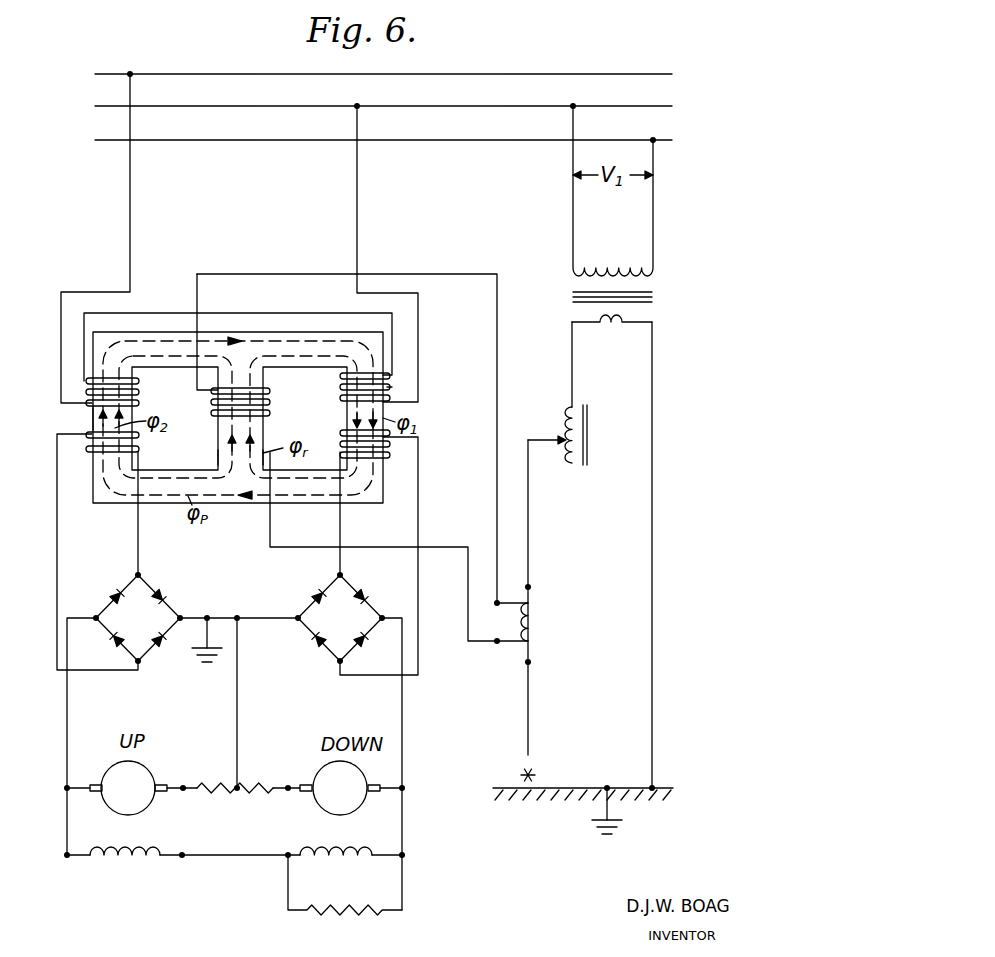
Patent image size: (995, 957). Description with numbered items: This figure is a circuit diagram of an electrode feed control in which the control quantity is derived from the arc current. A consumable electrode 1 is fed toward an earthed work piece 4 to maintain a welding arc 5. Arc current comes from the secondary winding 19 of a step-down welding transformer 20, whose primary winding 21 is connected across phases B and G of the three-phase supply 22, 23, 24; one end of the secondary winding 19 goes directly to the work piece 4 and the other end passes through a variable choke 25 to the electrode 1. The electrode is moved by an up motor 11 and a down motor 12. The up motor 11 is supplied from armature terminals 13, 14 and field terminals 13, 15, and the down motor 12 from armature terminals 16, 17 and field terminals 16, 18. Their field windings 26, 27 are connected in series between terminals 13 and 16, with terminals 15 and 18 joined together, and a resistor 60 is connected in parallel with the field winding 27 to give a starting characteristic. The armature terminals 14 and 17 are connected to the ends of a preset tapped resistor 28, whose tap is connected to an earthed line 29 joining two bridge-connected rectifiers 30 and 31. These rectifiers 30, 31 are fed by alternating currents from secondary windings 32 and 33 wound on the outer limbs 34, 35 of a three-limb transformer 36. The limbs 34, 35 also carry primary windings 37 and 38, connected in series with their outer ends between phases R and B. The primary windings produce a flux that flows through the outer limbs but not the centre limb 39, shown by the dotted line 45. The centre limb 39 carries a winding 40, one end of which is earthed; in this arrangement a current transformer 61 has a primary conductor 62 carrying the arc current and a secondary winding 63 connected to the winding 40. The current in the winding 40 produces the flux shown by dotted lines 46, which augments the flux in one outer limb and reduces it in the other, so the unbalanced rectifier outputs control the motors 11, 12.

The consumable electrode 1 is at (529, 717).
The work piece 4 is at (607, 788).
The welding arc 5 is at (537, 775).
The up motor 11 is at (128, 788).
The down motor 12 is at (340, 788).
The armature and field terminal 13 is at (66, 790).
The armature terminal 14 is at (183, 786).
The field terminal 15 is at (182, 859).
The armature and field terminal 16 is at (410, 788).
The armature terminal 17 is at (288, 786).
The field terminal 18 is at (286, 858).
The secondary winding 19 is at (617, 325).
The step-down welding transformer 20 is at (653, 296).
The primary winding 21 is at (621, 270).
The three-phase supply line 22 is at (513, 74).
The three-phase supply line 23 is at (535, 107).
The three-phase supply line 24 is at (457, 141).
The variable choke 25 is at (566, 424).
The field winding 26 is at (125, 862).
The field winding 27 is at (340, 862).
The preset tapped resistor 28 is at (237, 792).
The earthed line 29 is at (212, 618).
The bridge-connected rectifier 30 is at (138, 618).
The bridge-connected rectifier 31 is at (340, 618).
The secondary winding 32 is at (137, 446).
The secondary winding 33 is at (388, 454).
The outer limb 34 is at (92, 420).
The outer limb 35 is at (387, 405).
The three-limb transformer 36 is at (238, 417).
The primary winding 37 is at (137, 389).
The primary winding 38 is at (387, 387).
The centre limb 39 is at (230, 458).
The winding 40 is at (268, 401).
The primary flux path 45 is at (315, 495).
The control flux path 46 is at (168, 477).
The resistor 60 is at (357, 915).
The current transformer 61 is at (548, 623).
The primary conductor 62 is at (532, 589).
The secondary winding 63 is at (522, 645).